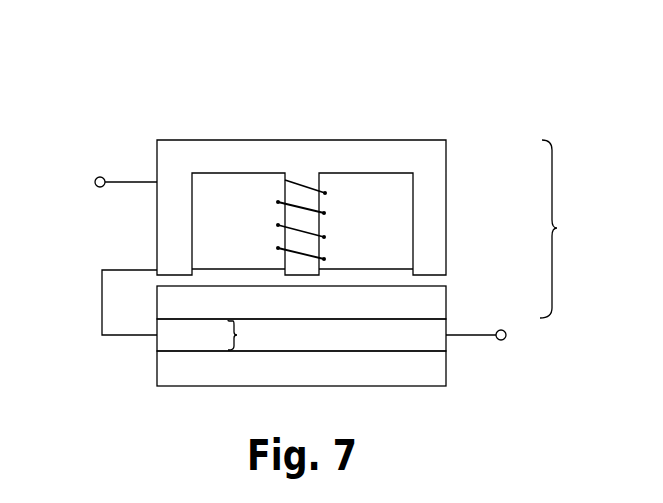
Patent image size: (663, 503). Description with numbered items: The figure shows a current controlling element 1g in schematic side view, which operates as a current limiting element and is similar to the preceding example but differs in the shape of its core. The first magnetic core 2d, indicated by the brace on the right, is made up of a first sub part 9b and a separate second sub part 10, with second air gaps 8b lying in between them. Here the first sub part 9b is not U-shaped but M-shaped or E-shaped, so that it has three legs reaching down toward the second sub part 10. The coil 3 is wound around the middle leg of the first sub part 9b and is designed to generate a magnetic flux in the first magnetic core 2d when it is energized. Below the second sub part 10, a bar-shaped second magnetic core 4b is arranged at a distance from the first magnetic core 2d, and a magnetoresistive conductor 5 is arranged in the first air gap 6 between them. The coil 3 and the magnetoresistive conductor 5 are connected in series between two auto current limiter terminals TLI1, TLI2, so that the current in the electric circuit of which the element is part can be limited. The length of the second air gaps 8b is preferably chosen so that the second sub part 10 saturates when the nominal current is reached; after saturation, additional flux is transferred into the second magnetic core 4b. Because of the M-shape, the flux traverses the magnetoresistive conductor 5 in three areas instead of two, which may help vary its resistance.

The current controlling element 1g is at (97, 62).
The first sub part of first magnetic core 9b is at (438, 229).
The second air gap 8b is at (447, 280).
The coil 3 is at (318, 250).
The second sub part of first magnetic core 10 is at (437, 305).
The magnetoresistive conductor 5 is at (440, 342).
The first air gap 6 is at (246, 335).
The second magnetic core 4b is at (438, 376).
The auto current limiter terminal TLI1 is at (94, 184).
The auto current limiter terminal TLI2 is at (509, 345).
The first magnetic core 2d is at (569, 229).